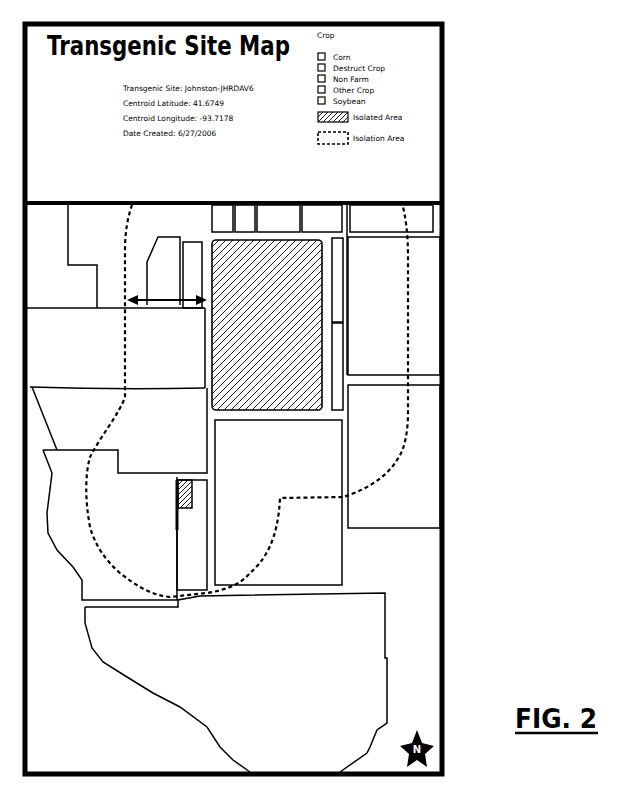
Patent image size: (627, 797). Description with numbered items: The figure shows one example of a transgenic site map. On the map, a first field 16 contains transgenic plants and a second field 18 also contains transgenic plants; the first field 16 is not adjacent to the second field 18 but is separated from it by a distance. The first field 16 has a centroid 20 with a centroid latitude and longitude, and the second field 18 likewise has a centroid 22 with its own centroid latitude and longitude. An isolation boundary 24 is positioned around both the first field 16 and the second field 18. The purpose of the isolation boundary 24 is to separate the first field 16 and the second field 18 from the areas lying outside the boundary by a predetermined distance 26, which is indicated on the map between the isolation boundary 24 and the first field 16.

The first field 16 is at (283, 391).
The second field 18 is at (178, 503).
The centroid 20 is at (265, 327).
The centroid 22 is at (183, 483).
The isolation boundary 24 is at (408, 338).
The predetermined distance 26 is at (168, 300).